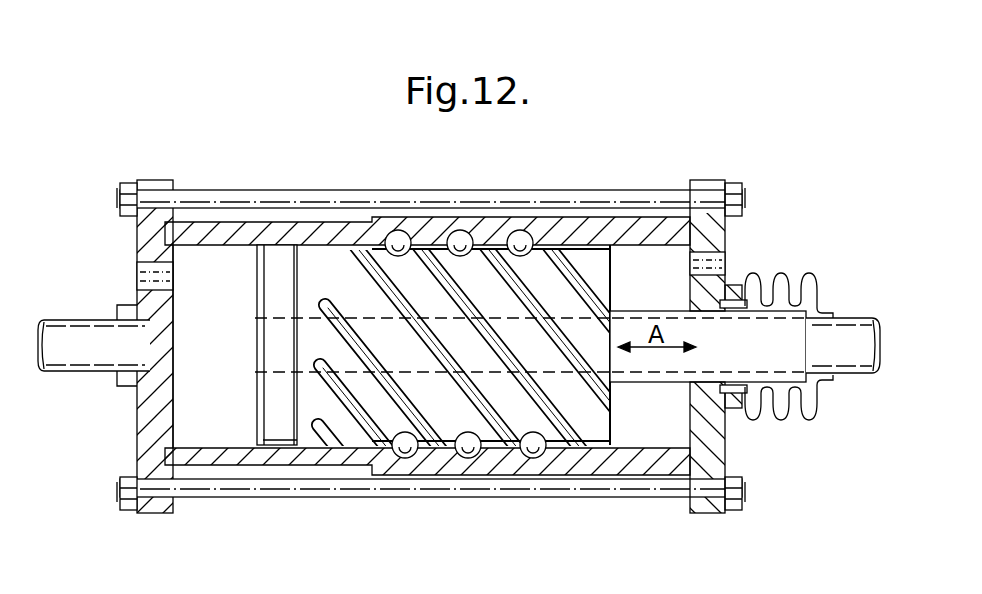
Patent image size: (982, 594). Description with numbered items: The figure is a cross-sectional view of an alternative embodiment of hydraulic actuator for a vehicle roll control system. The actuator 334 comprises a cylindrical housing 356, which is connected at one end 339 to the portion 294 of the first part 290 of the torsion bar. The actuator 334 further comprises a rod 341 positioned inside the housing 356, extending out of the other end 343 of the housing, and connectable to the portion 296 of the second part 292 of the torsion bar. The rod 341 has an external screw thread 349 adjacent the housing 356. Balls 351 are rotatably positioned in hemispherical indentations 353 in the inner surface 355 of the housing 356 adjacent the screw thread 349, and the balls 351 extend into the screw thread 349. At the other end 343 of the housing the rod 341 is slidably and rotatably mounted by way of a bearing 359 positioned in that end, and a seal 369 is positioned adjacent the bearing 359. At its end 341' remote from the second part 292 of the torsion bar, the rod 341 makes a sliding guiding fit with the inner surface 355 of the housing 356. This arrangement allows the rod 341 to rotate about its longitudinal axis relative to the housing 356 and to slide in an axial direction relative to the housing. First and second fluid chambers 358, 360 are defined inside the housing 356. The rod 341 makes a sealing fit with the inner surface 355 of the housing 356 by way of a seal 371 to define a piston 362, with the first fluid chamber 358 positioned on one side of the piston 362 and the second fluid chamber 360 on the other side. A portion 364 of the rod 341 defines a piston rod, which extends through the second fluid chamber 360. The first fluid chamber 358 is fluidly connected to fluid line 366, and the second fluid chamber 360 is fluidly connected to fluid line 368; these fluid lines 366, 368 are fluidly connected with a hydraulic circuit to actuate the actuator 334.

The first part of the torsion bar 290 is at (80, 360).
The second part of the torsion bar 292 is at (847, 363).
The portion of the first part 294 is at (90, 332).
The portion of the second part 296 is at (853, 323).
The actuator 334 is at (213, 503).
The one end of the housing 339 is at (148, 408).
The rod 341 is at (525, 304).
The end of the rod 341' is at (247, 345).
The other end of the housing 343 is at (717, 448).
The external screw thread 349 is at (413, 257).
The balls 351 is at (458, 237).
The hemispherical indentations 353 is at (468, 450).
The inner surface of the housing 355 is at (627, 430).
The cylindrical housing 356 is at (300, 463).
The first fluid chamber 358 is at (218, 257).
The bearing 359 is at (742, 300).
The second fluid chamber 360 is at (660, 427).
The piston 362 is at (432, 433).
The portion of the rod 364 is at (773, 354).
The fluid line 366 is at (137, 267).
The fluid line 368 is at (727, 260).
The seal 369 is at (735, 400).
The seal 371 is at (273, 447).